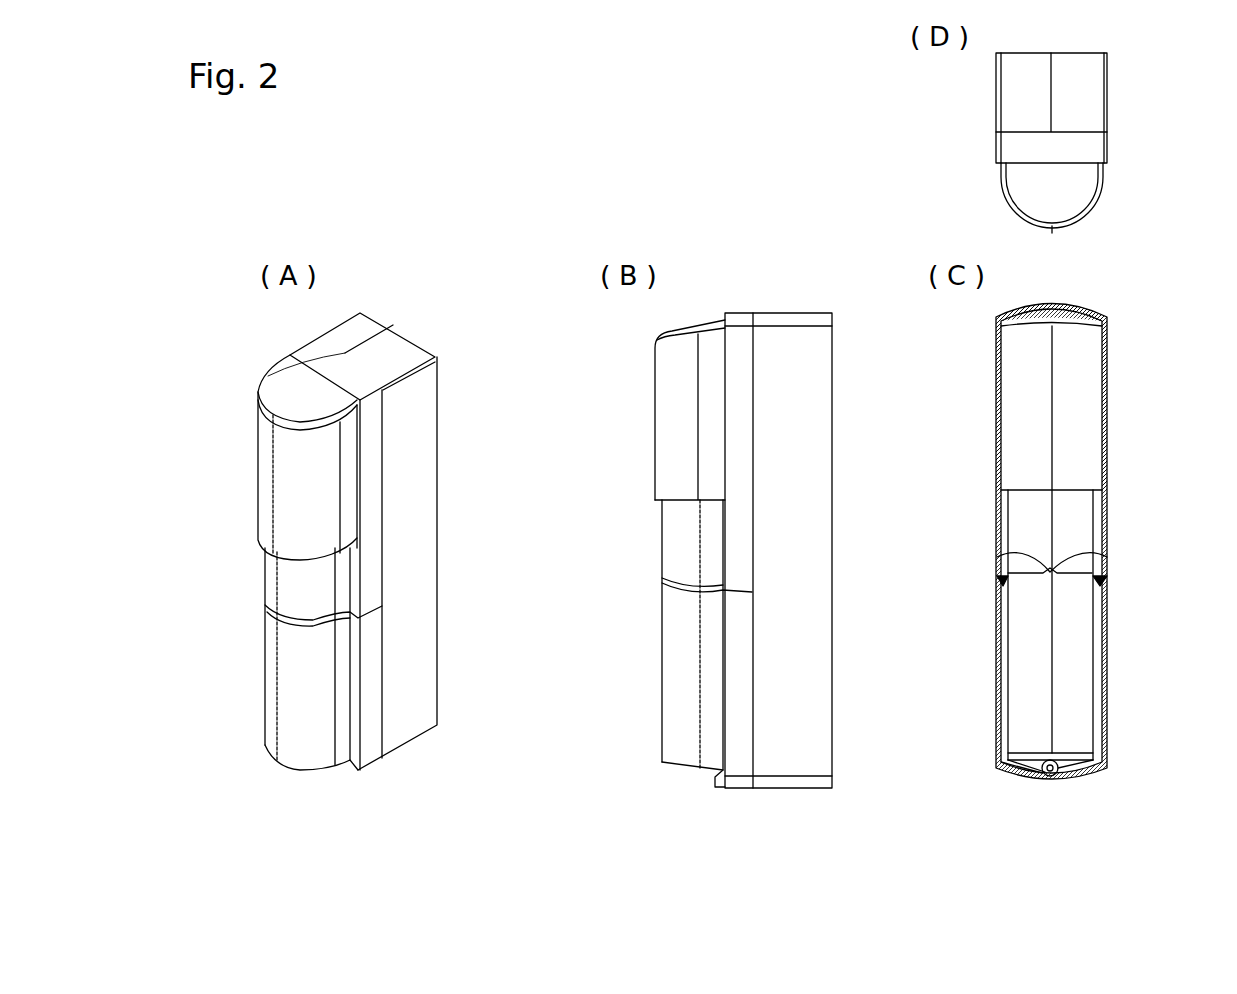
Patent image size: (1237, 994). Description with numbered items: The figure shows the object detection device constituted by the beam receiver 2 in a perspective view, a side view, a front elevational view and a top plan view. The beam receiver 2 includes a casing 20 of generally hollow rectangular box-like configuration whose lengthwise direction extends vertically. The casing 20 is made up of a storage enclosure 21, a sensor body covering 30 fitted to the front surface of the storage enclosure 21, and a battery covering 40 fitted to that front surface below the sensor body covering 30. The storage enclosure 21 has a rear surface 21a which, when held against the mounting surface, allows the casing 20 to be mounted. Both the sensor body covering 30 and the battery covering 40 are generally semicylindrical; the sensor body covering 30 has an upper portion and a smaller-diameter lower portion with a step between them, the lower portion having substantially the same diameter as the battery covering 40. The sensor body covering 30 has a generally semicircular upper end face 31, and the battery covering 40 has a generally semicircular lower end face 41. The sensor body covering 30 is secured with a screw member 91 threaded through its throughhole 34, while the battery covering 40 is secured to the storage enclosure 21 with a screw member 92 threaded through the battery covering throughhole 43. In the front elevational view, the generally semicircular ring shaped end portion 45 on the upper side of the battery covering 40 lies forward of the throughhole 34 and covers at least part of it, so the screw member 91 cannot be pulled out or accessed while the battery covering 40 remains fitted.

The beam receiver 2 is at (483, 340).
The casing 20 is at (445, 445).
The storage enclosure 21 is at (432, 540).
The rear surface 21a is at (437, 652).
The sensor body covering 30 is at (265, 488).
The upper end face 31 is at (292, 388).
The sensor body covering throughhole 34 is at (1113, 556).
The battery covering 40 is at (273, 697).
The lower end face 41 is at (307, 770).
The battery covering throughhole 43 is at (1050, 778).
The semicircular ring shaped end portion 45 is at (1078, 582).
The screw member 91 is at (997, 557).
The screw member 92 is at (1042, 768).